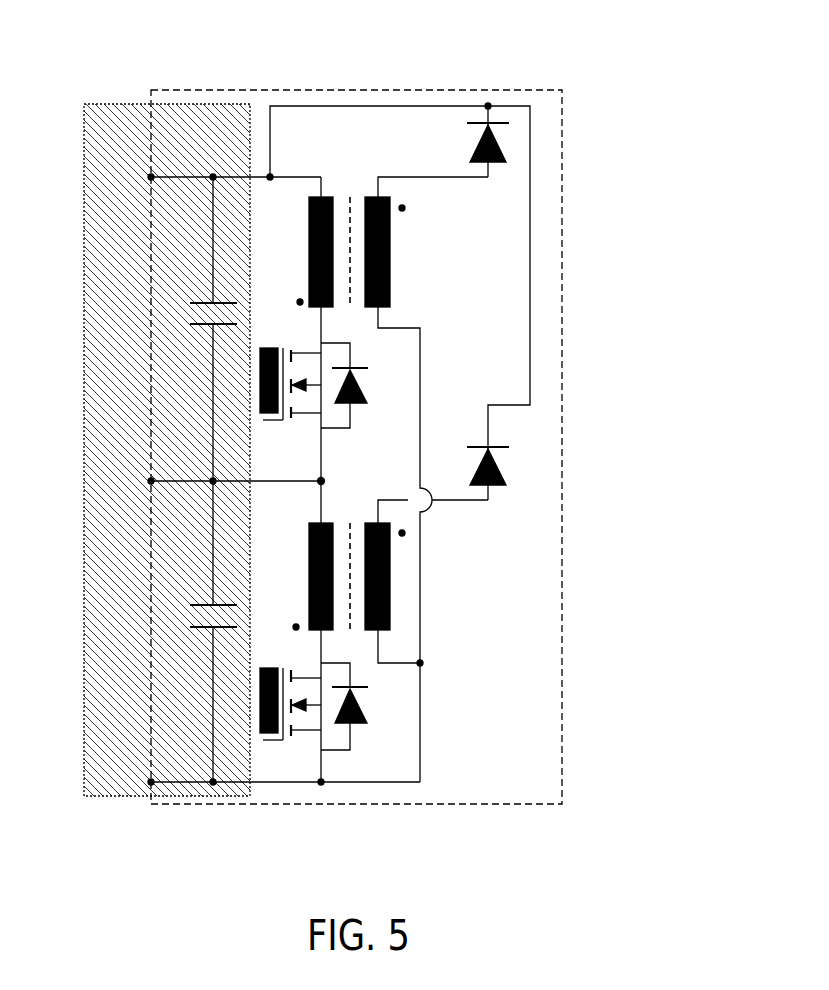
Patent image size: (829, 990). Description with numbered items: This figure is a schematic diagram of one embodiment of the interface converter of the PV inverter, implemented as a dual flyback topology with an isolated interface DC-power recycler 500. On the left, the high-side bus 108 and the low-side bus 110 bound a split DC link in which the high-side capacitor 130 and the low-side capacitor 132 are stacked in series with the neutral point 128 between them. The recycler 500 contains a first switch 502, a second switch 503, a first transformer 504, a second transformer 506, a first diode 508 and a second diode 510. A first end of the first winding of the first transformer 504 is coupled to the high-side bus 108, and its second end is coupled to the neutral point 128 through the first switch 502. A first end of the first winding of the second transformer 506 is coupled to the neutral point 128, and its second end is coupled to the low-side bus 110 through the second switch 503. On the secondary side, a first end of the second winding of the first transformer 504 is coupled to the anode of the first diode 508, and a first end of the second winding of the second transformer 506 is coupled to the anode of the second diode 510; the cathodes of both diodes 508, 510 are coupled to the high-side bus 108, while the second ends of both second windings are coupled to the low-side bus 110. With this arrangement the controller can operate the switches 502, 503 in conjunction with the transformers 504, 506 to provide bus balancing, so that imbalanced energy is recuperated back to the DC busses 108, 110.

The high-side bus 108 is at (213, 177).
The low-side bus 110 is at (213, 784).
The neutral point 128 is at (151, 481).
The high-side capacitor 130 is at (200, 301).
The low-side capacitor 132 is at (196, 603).
The isolated interface DC-power recycler 500 is at (612, 100).
The first switch 502 is at (263, 420).
The second switch 503 is at (265, 740).
The first transformer 504 is at (327, 196).
The second transformer 506 is at (331, 518).
The first diode 508 is at (493, 163).
The second diode 510 is at (493, 487).